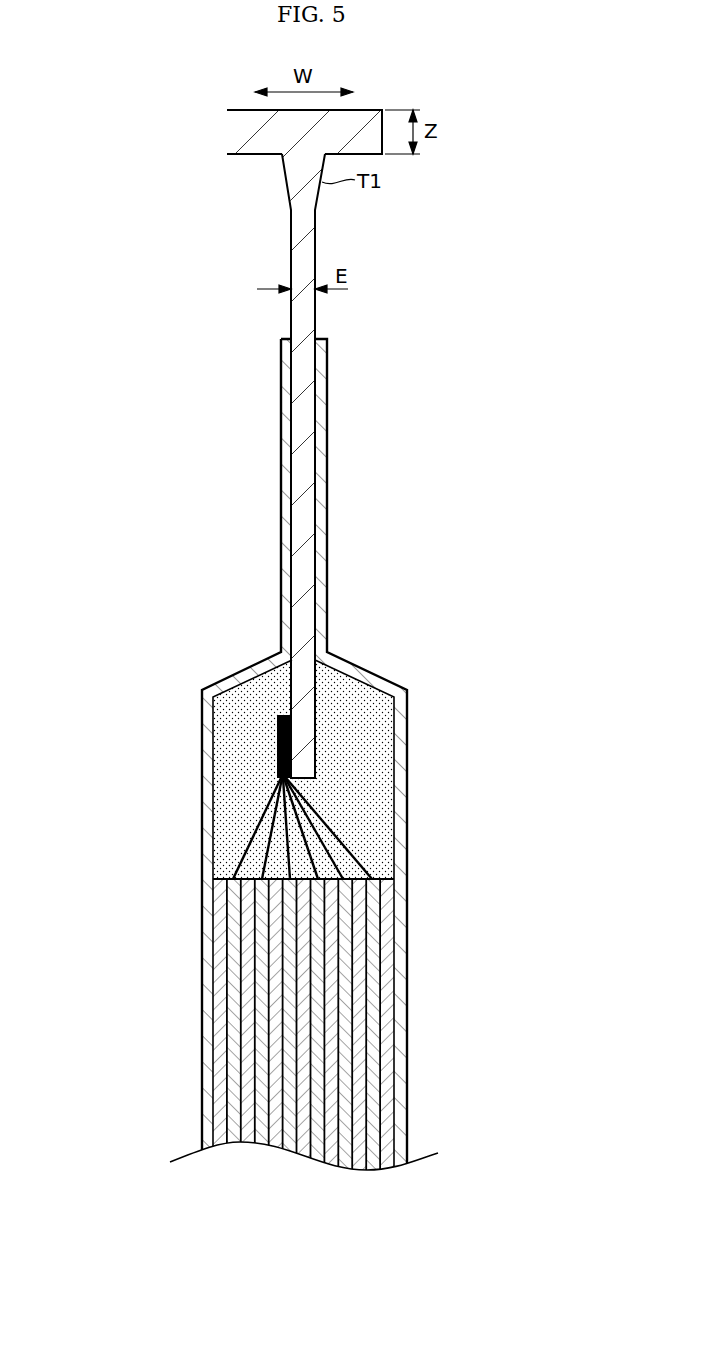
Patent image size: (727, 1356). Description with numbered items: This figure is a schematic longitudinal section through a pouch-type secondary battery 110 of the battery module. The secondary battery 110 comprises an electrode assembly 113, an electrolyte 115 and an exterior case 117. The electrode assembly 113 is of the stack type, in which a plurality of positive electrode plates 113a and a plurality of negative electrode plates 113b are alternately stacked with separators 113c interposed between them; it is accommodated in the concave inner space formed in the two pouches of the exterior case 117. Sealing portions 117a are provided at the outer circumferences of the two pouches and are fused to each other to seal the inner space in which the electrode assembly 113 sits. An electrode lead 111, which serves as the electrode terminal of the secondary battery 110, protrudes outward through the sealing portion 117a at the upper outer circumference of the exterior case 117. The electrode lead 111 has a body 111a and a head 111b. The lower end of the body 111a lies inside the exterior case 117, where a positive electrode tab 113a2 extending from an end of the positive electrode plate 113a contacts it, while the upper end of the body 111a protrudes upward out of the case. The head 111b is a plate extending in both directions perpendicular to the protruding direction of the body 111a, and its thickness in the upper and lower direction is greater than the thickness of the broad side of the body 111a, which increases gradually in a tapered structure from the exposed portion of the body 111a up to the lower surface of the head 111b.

The secondary battery 110 is at (184, 896).
The electrode lead 111 is at (363, 447).
The body 111a is at (291, 235).
The head 111b is at (227, 130).
The electrode assembly 113 is at (377, 1039).
The positive electrode plate 113a is at (373, 958).
The negative electrode plate 113b is at (348, 988).
The separator 113c is at (362, 1022).
The positive electrode tab 113a2 is at (333, 833).
The electrolyte 115 is at (375, 738).
The exterior case 117 is at (268, 769).
The sealing portion 117a is at (281, 480).